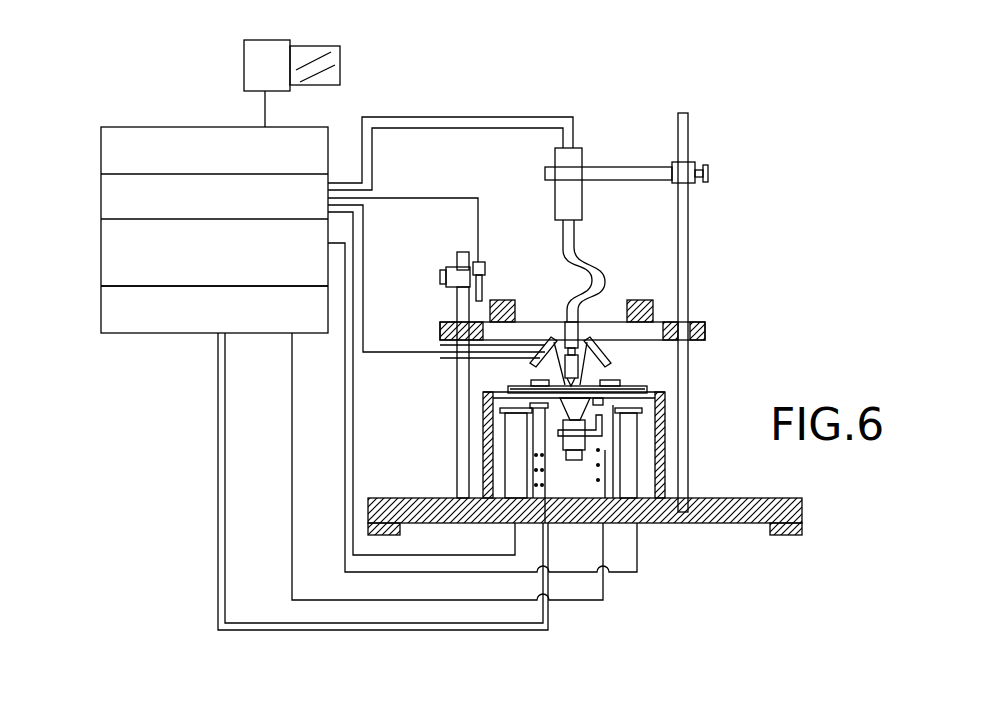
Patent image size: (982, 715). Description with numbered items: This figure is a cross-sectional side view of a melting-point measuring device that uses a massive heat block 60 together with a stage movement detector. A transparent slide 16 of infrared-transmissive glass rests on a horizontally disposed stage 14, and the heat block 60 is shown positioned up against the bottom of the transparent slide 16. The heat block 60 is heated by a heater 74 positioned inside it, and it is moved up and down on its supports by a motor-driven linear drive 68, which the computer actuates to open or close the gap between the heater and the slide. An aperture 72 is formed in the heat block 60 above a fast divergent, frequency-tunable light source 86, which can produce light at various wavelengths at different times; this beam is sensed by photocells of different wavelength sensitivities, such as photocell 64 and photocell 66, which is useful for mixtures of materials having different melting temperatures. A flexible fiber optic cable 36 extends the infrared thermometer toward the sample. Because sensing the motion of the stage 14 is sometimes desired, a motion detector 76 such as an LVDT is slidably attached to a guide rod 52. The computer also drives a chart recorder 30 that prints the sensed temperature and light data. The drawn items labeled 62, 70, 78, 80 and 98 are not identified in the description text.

The stage 14 is at (485, 420).
The transparent slide 16 is at (527, 387).
The chart recorder 30 is at (260, 52).
The flexible fiber optic cable 36 is at (588, 262).
The guide rod 52 is at (440, 273).
The heat block 60 is at (515, 394).
The lid 62 is at (645, 387).
The photocell 64 is at (440, 355).
The photocell 66 is at (600, 335).
The motor-driven linear drive 68 is at (445, 500).
The heating element 70 is at (512, 450).
The aperture 72 is at (590, 385).
The heater 74 is at (505, 406).
The motion detector 76 is at (485, 278).
The heater program 78 is at (108, 327).
The programmed servo power out 80 is at (108, 256).
The frequency-tunable light source 86 is at (567, 520).
The signal lines 98 is at (420, 343).